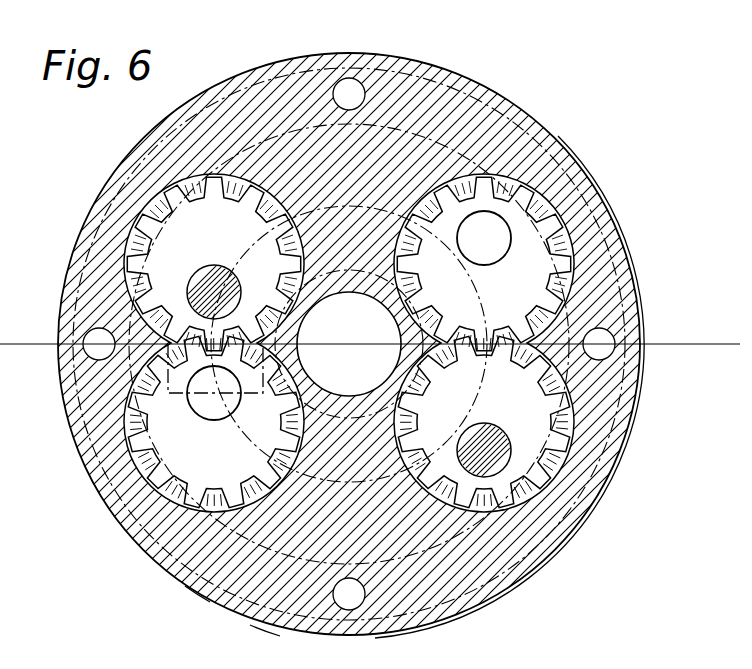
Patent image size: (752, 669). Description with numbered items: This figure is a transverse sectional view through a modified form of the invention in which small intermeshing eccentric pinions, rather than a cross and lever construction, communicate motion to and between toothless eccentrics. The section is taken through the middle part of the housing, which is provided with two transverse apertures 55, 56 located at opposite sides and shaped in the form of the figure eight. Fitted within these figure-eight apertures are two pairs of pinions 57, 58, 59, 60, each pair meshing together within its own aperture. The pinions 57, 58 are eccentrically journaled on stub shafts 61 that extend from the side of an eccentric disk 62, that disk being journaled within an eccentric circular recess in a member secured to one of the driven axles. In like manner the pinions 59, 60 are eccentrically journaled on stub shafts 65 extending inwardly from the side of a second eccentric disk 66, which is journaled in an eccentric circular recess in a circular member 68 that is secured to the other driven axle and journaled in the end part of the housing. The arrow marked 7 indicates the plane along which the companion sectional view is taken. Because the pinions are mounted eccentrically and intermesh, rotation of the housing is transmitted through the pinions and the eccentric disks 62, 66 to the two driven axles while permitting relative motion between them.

The transverse aperture 55 is at (566, 220).
The transverse aperture 56 is at (123, 262).
The pinion 57 is at (123, 230).
The pinion 58 is at (568, 412).
The pinion 59 is at (556, 146).
The pinion 60 is at (113, 510).
The stub shaft 61 is at (220, 283).
The eccentric disk 62 is at (258, 477).
The stub shaft 65 is at (486, 232).
The eccentric disk 66 is at (203, 597).
The circular member 68 is at (263, 632).
The section line 7 is at (688, 328).